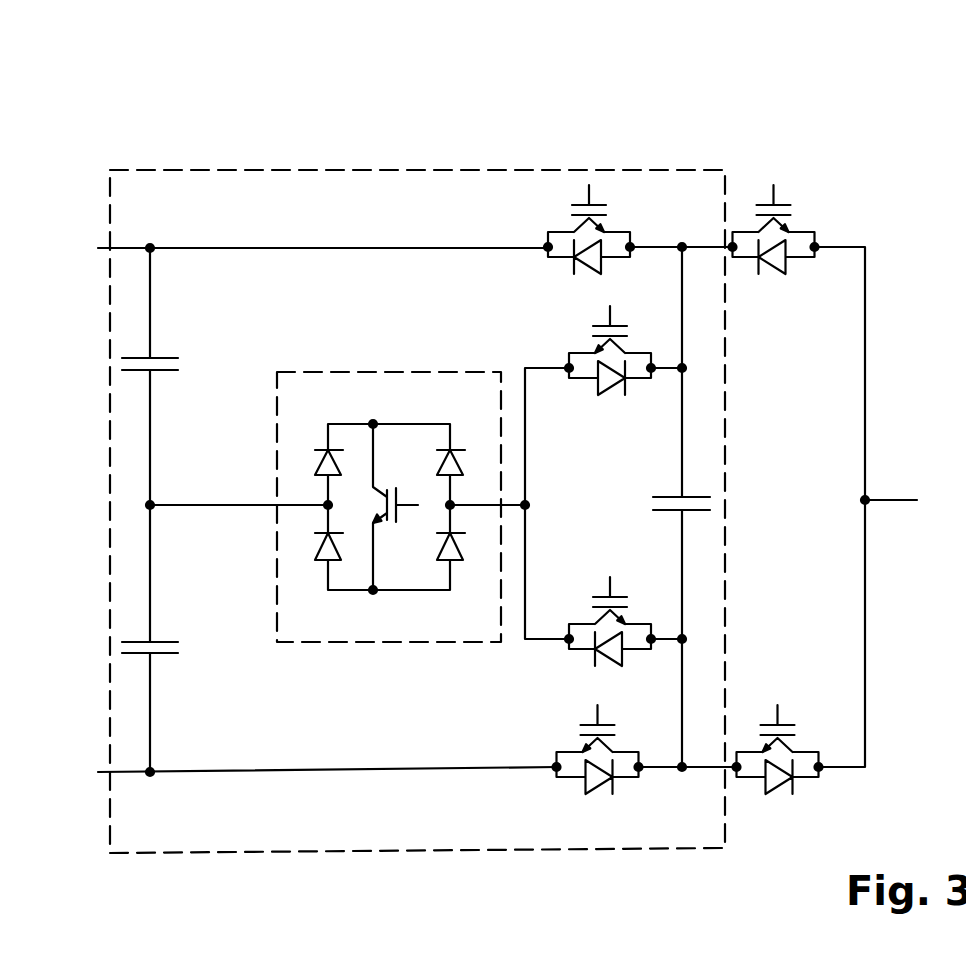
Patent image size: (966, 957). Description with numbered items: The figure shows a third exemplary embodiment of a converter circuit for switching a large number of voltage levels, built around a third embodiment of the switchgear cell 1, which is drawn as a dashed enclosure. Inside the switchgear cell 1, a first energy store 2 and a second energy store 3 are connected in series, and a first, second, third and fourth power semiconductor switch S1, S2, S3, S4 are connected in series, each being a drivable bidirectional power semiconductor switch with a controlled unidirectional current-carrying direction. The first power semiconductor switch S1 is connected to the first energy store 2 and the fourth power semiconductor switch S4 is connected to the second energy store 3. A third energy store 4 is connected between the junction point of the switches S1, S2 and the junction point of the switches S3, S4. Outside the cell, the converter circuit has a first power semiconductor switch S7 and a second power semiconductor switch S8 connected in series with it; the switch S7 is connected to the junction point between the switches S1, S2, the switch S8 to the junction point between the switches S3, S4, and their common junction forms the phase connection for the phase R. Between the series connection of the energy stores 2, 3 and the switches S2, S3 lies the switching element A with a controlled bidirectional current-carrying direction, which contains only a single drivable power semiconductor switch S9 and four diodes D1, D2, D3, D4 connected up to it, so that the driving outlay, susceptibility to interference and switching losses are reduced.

The switchgear cell 1 is at (327, 170).
The first energy store 2 is at (150, 358).
The second energy store 3 is at (146, 642).
The third energy store 4 is at (694, 497).
The switching element with controlled bidirectional current-carrying direction A is at (450, 372).
The first power semiconductor switch S1 is at (604, 226).
The second power semiconductor switch S2 is at (618, 350).
The third power semiconductor switch S3 is at (618, 621).
The fourth power semiconductor switch S4 is at (602, 765).
The first power semiconductor switch of the converter circuit S7 is at (789, 226).
The second power semiconductor switch of the converter circuit S8 is at (781, 765).
The drivable power semiconductor switch with controlled unidirectional current-carry S9 is at (399, 507).
The unidirectional power semiconductor switch with uncontrolled current-carrying dir D1 is at (320, 447).
The unidirectional power semiconductor switch with uncontrolled current-carrying dir D2 is at (466, 447).
The unidirectional power semiconductor switch with uncontrolled current-carrying dir D3 is at (318, 564).
The unidirectional power semiconductor switch with uncontrolled current-carrying dir D4 is at (466, 564).
The phase R is at (902, 504).